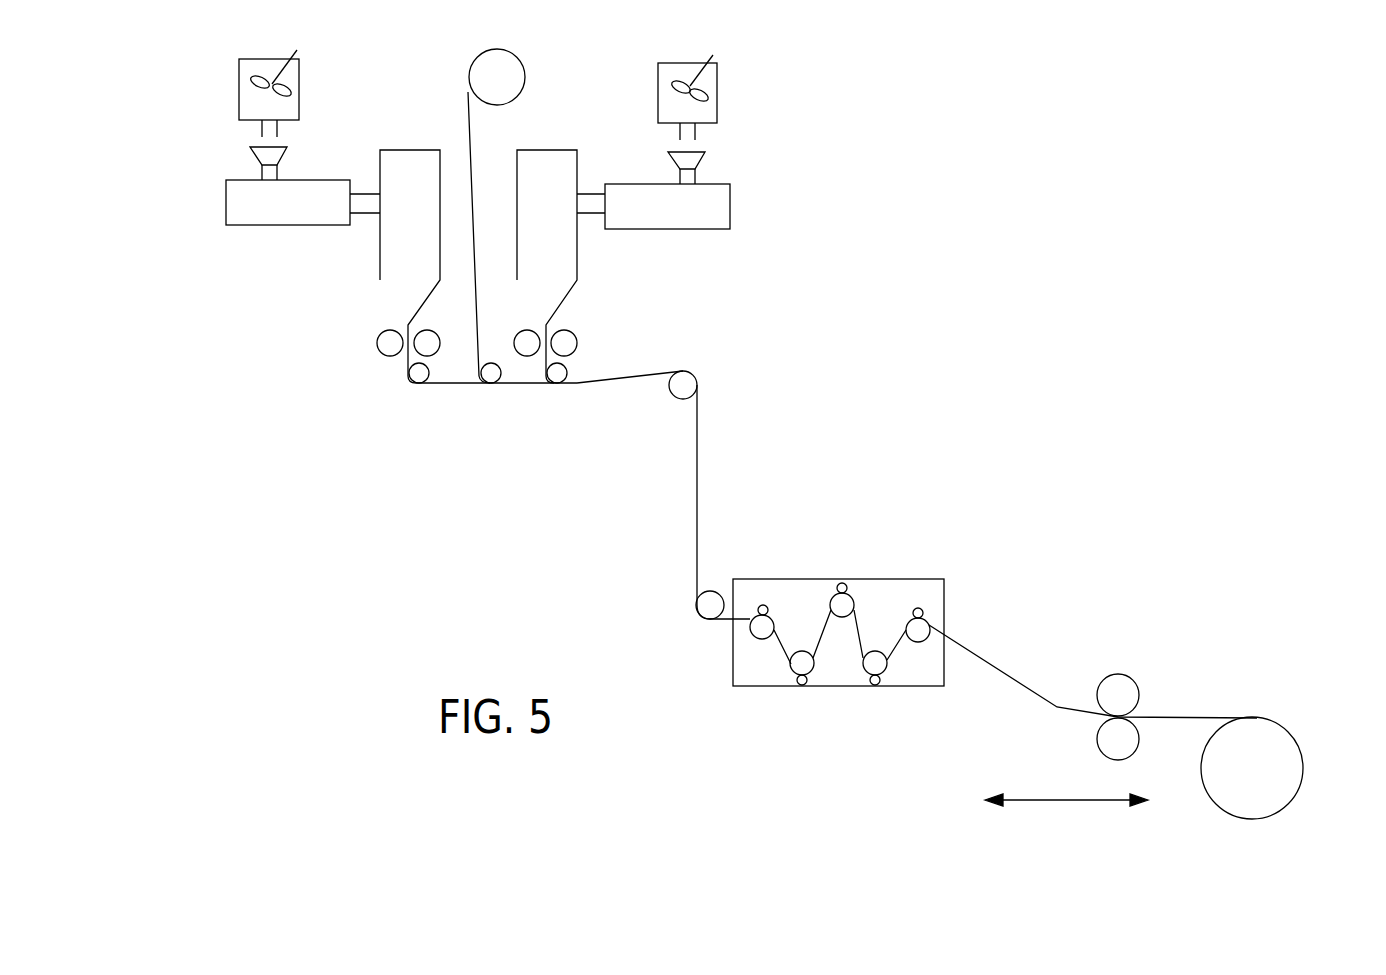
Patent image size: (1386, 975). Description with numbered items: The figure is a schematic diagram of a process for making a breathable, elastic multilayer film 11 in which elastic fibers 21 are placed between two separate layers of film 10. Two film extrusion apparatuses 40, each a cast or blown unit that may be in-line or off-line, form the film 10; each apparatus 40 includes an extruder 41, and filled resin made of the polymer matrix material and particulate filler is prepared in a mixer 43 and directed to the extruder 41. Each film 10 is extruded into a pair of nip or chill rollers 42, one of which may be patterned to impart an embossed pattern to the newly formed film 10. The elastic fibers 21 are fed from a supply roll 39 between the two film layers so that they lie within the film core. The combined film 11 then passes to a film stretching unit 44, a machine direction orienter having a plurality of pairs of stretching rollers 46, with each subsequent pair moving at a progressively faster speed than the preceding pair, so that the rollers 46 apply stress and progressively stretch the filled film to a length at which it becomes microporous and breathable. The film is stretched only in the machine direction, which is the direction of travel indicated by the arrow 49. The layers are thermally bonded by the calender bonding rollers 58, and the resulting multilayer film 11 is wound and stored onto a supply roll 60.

The film 10 is at (440, 385).
The multilayer film 11 is at (697, 437).
The elastic fibers 21 is at (468, 110).
The supply roll 39 is at (513, 72).
The film extrusion apparatus 40 is at (412, 157).
The extruder 41 is at (235, 206).
The nip or chill rollers 42 is at (378, 343).
The mixer 43 is at (245, 103).
The film stretching unit 44 is at (872, 560).
The stretching rollers 46 is at (763, 605).
The arrow 49 is at (1060, 803).
The calender bonding rollers 58 is at (1140, 685).
The supply roll 60 is at (1302, 750).